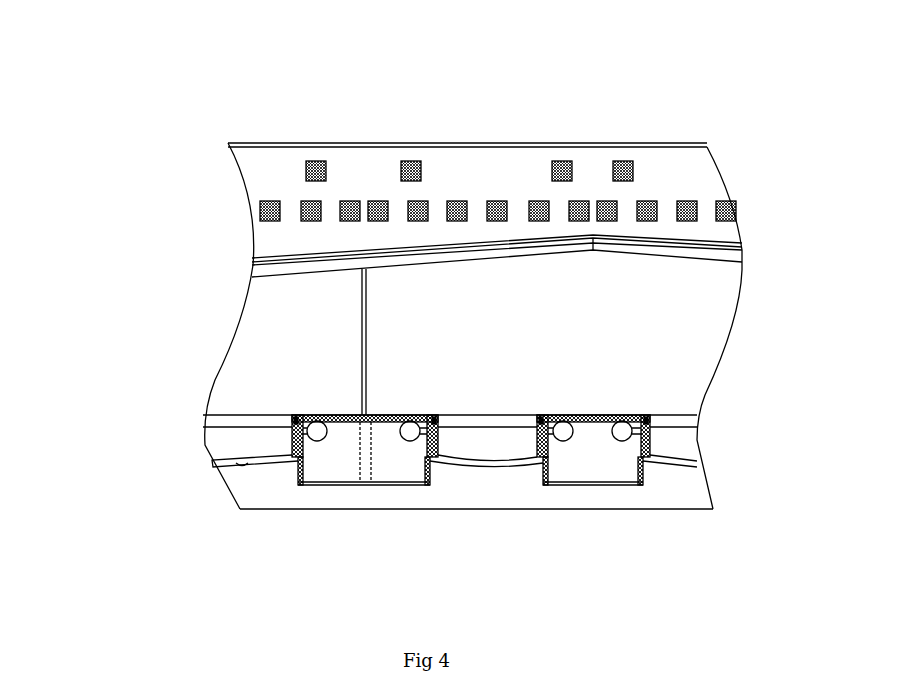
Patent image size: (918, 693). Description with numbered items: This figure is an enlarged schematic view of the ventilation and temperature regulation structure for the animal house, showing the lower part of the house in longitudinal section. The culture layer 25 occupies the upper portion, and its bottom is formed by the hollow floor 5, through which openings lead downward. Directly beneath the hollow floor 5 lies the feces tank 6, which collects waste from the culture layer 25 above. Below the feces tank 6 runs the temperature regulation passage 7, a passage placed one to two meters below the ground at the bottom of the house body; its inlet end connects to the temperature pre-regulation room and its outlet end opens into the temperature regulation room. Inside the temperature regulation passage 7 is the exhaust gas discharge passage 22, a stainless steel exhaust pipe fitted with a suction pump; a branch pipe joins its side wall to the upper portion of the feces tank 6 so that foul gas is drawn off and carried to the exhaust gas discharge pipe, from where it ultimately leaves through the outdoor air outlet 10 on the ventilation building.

The hollow floor 5 is at (260, 425).
The feces tank 6 is at (493, 443).
The temperature regulation passage 7 is at (600, 458).
The outdoor air outlet 10 is at (410, 168).
The exhaust gas discharge passage 22 is at (623, 431).
The culture layer 25 is at (688, 348).